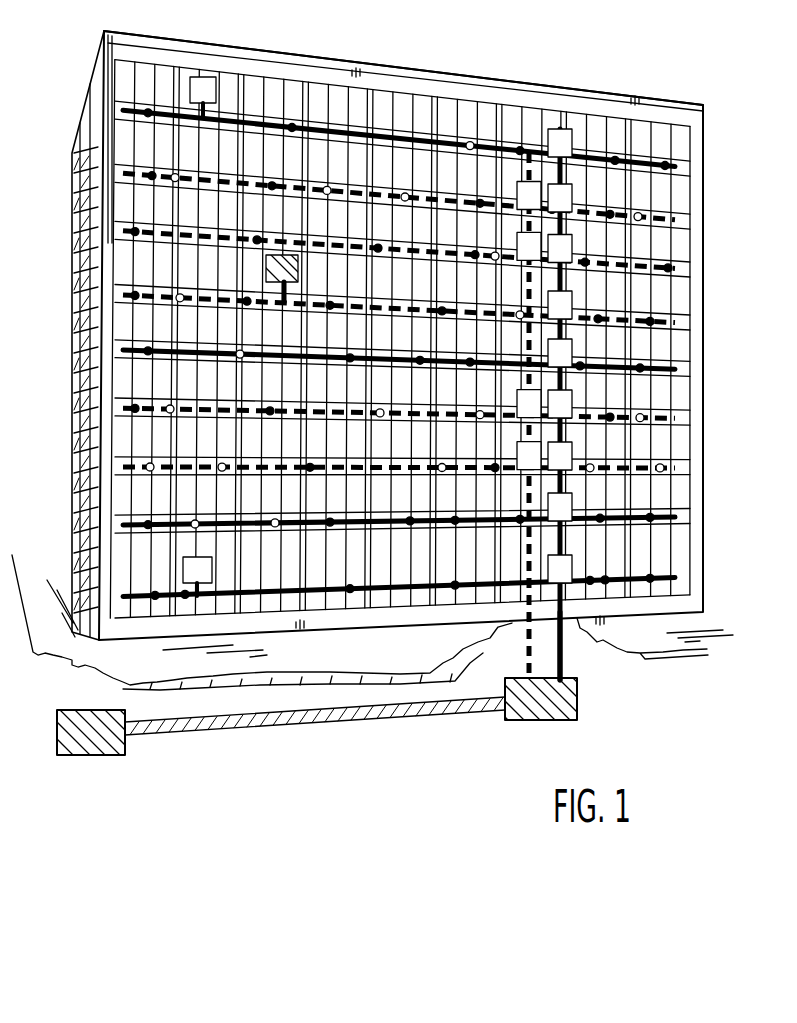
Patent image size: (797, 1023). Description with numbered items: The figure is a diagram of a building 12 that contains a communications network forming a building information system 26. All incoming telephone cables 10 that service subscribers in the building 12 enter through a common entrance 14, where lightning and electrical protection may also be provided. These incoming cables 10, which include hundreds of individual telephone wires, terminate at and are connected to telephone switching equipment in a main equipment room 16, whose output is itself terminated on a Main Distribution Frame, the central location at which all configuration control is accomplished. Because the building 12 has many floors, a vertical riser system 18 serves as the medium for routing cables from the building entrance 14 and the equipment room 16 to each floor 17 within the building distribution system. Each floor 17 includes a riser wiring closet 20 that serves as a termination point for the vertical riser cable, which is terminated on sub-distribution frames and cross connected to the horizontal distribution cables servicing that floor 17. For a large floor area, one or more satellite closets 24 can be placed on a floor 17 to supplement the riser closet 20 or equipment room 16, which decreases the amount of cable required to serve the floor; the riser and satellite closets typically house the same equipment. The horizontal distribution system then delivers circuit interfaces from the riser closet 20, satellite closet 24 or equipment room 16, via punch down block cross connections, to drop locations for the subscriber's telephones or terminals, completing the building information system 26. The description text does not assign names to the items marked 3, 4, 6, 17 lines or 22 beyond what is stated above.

The riser conduits 3 is at (551, 416).
The signal distribution units 4 is at (544, 356).
The horizontal branch lines 6 is at (410, 354).
The incoming cables 10 is at (288, 733).
The building 12 is at (710, 122).
The common entrance 14 is at (107, 755).
The main equipment room 16 is at (538, 721).
The floor 17 is at (676, 339).
The vertical riser system 18 is at (577, 626).
The riser wiring closet 20 is at (567, 128).
The window panels 22 is at (400, 339).
The satellite closets 24 is at (217, 97).
The building information system 26 is at (486, 60).